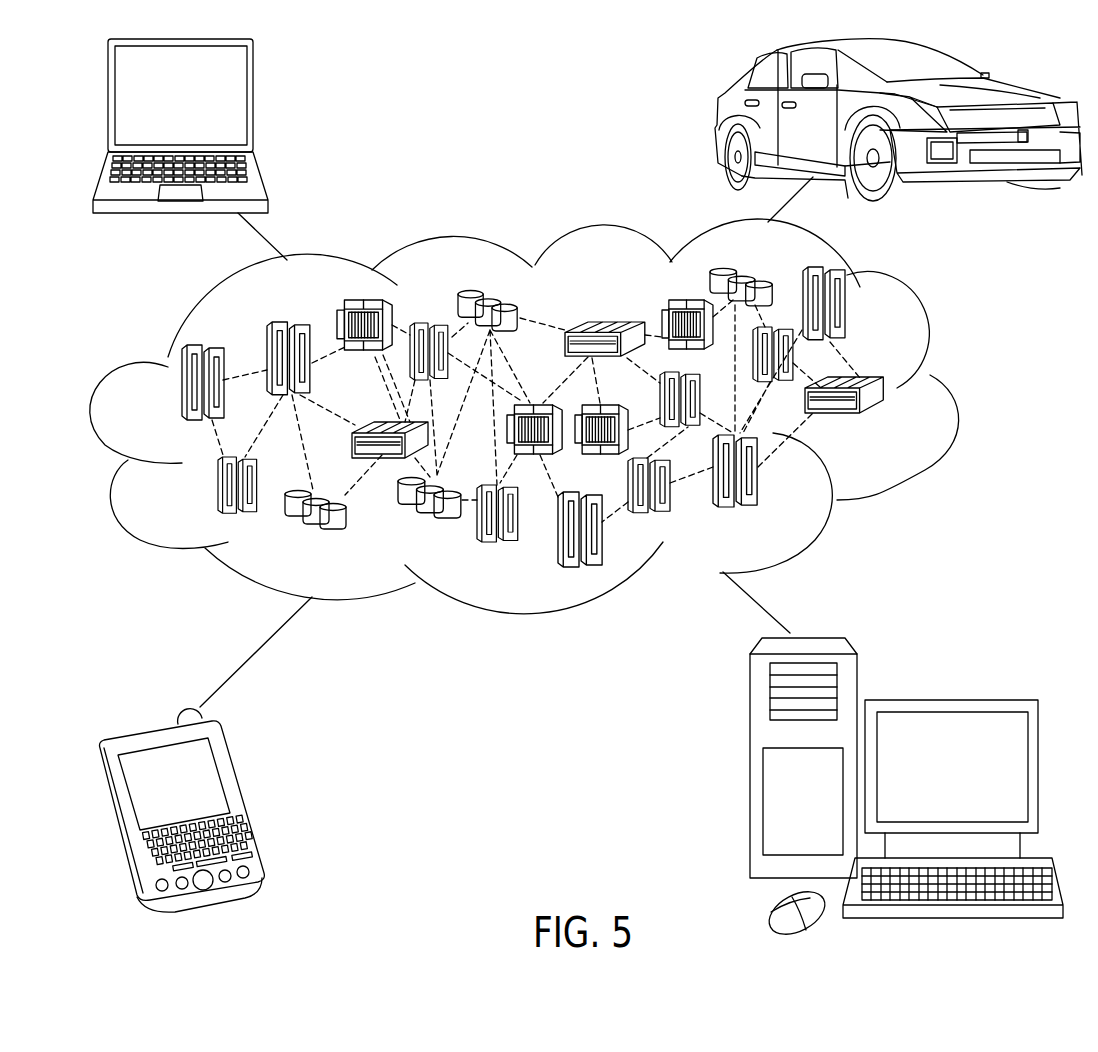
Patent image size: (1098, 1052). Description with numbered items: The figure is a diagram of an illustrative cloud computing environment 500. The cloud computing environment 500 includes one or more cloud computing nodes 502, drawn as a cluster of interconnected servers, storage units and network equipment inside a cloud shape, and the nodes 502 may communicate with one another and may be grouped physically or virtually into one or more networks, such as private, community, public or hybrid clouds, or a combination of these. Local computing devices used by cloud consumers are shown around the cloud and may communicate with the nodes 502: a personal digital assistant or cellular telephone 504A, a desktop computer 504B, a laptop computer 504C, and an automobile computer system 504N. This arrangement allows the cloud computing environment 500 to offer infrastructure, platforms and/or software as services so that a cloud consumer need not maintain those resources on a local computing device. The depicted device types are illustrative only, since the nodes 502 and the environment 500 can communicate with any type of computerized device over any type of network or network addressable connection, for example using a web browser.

The cloud computing environment 500 is at (553, 416).
The cloud computing nodes 502 is at (888, 425).
The personal digital assistant (PDA) or cellular telephone 504A is at (245, 797).
The desktop computer 504B is at (950, 698).
The laptop computer 504C is at (253, 103).
The automobile computer system 504N is at (718, 120).